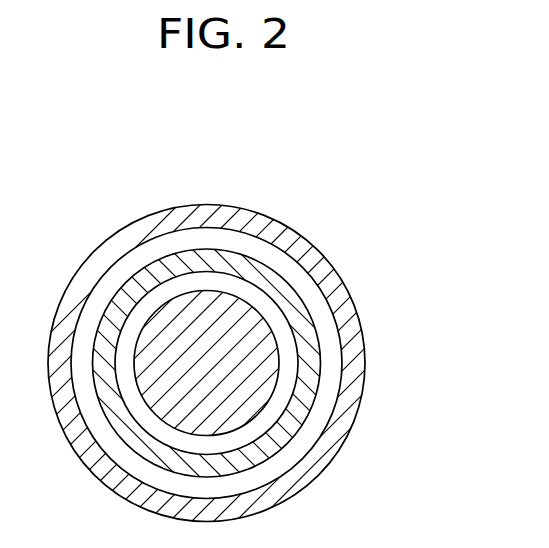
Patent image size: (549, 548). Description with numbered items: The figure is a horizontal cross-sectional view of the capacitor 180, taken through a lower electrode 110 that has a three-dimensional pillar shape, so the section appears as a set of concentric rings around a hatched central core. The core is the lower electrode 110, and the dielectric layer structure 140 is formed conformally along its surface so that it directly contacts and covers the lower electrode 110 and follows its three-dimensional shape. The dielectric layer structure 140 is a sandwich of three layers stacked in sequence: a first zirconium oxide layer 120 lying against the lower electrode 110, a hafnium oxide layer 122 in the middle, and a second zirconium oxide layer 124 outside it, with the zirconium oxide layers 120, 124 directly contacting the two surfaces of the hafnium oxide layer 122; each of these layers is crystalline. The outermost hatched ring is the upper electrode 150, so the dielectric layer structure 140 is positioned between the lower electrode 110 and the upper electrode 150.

The lower electrode 110 is at (278, 381).
The first zirconium oxide layer 120 is at (296, 352).
The hafnium oxide layer 122 is at (301, 318).
The second zirconium oxide layer 124 is at (324, 295).
The dielectric layer structure 140 is at (443, 286).
The upper electrode 150 is at (335, 443).
The capacitor 180 is at (274, 346).